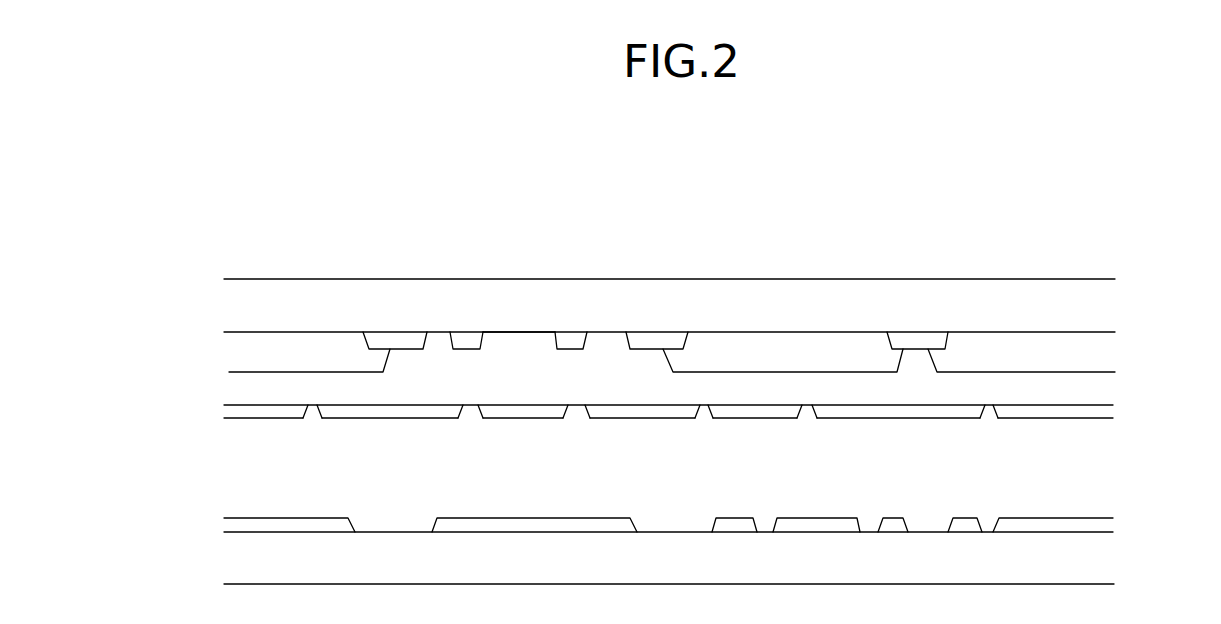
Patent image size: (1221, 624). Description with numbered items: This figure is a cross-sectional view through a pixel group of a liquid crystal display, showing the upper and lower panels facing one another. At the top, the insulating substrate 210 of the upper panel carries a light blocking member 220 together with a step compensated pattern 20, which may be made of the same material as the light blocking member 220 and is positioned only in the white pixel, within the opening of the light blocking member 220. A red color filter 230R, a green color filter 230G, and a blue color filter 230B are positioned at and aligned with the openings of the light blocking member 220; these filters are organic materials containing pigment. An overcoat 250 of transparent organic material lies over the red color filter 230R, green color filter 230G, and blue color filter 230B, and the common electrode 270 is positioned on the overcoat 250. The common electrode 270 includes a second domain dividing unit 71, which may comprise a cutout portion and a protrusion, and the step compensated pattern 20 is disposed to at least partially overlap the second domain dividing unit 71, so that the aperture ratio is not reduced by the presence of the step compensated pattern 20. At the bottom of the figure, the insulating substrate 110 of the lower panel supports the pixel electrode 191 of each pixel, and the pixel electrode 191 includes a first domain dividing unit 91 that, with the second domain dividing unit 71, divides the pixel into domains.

The insulating substrate 210 is at (1103, 304).
The light blocking member 220 is at (393, 338).
The step compensated pattern 20 is at (465, 338).
The overcoat 250 is at (523, 338).
The green color filter 230G is at (322, 338).
The red color filter 230R is at (797, 338).
The blue color filter 230B is at (1006, 338).
The common electrode 270 is at (1105, 412).
The second domain dividing unit 71 is at (315, 420).
The pixel electrode 191 is at (305, 527).
The first domain dividing unit 91 is at (757, 525).
The insulating substrate 110 is at (1103, 558).